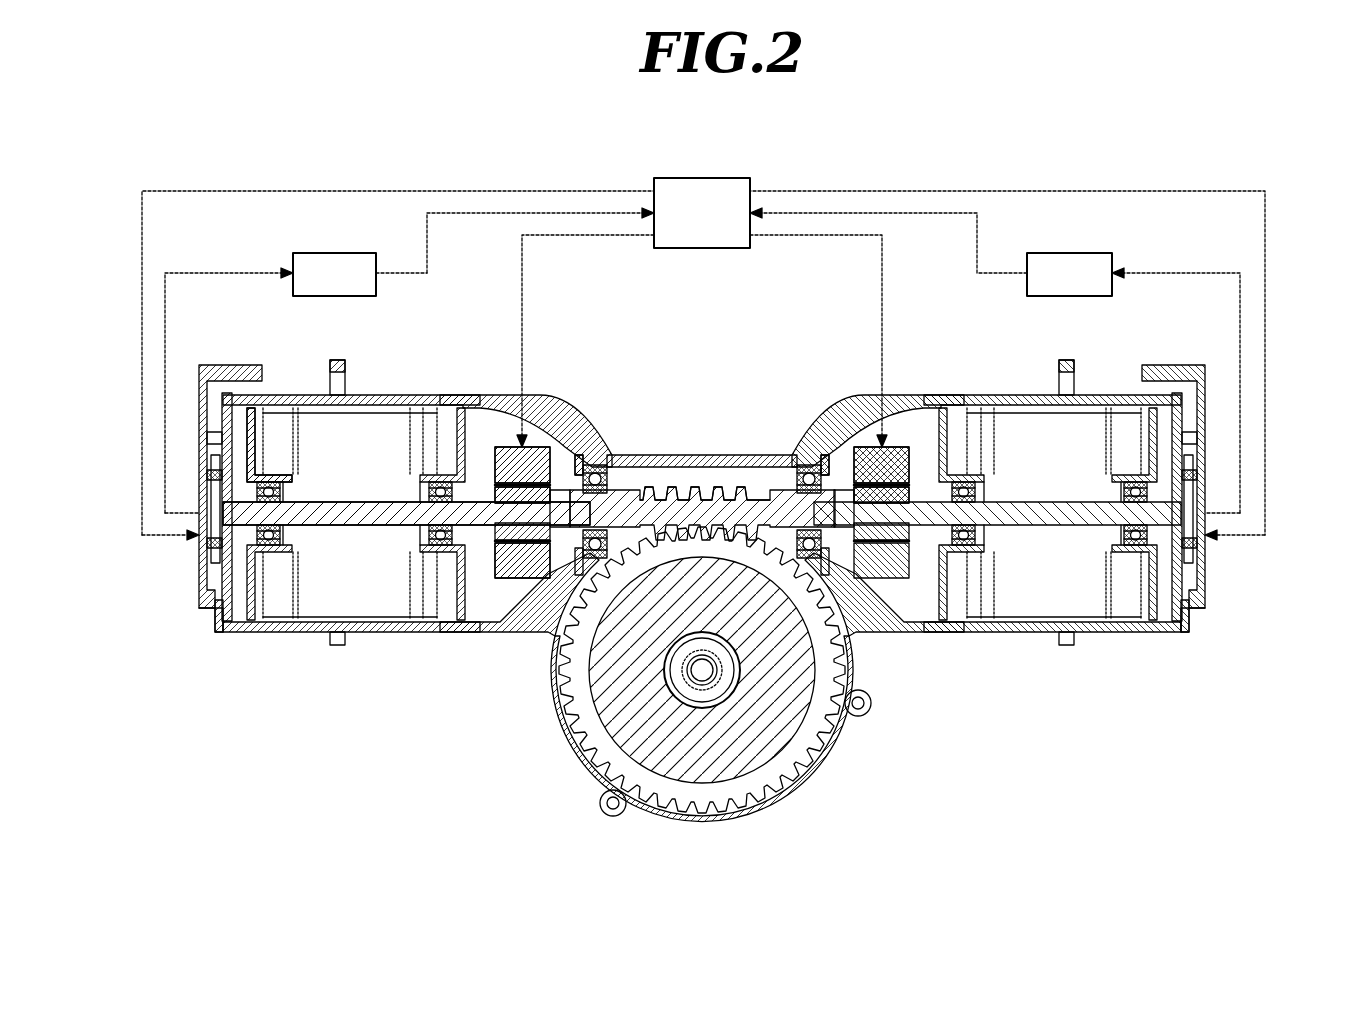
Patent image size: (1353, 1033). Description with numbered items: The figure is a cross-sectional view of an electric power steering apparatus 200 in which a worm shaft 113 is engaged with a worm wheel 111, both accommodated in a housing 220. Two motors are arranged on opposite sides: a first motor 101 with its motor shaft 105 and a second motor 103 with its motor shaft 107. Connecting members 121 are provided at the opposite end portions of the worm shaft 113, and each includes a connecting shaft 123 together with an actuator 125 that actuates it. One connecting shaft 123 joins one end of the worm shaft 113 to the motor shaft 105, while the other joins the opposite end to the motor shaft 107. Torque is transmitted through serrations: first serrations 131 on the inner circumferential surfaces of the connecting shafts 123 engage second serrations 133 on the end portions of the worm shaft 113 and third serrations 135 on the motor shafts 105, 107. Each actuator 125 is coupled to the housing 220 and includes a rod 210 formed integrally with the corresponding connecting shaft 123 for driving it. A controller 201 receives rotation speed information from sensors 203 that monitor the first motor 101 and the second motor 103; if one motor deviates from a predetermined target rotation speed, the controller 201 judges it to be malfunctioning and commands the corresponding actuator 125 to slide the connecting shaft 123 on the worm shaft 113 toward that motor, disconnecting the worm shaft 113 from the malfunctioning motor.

The electric power steering apparatus 200 is at (217, 153).
The controller 201 is at (701, 177).
The sensors 203 is at (334, 252).
The first motor 101 is at (278, 640).
The second motor 103 is at (1127, 640).
The motor shaft 105 is at (240, 530).
The motor shaft 107 is at (1165, 530).
The worm wheel 111 is at (706, 793).
The worm shaft 113 is at (708, 510).
The connecting members 121 is at (626, 347).
The connecting shaft 123 is at (551, 465).
The rod 210 is at (702, 495).
The actuator 125 is at (578, 455).
The first serrations 131 is at (490, 545).
The second serrations 133 is at (530, 578).
The third serrations 135 is at (463, 557).
The housing 220 is at (674, 455).